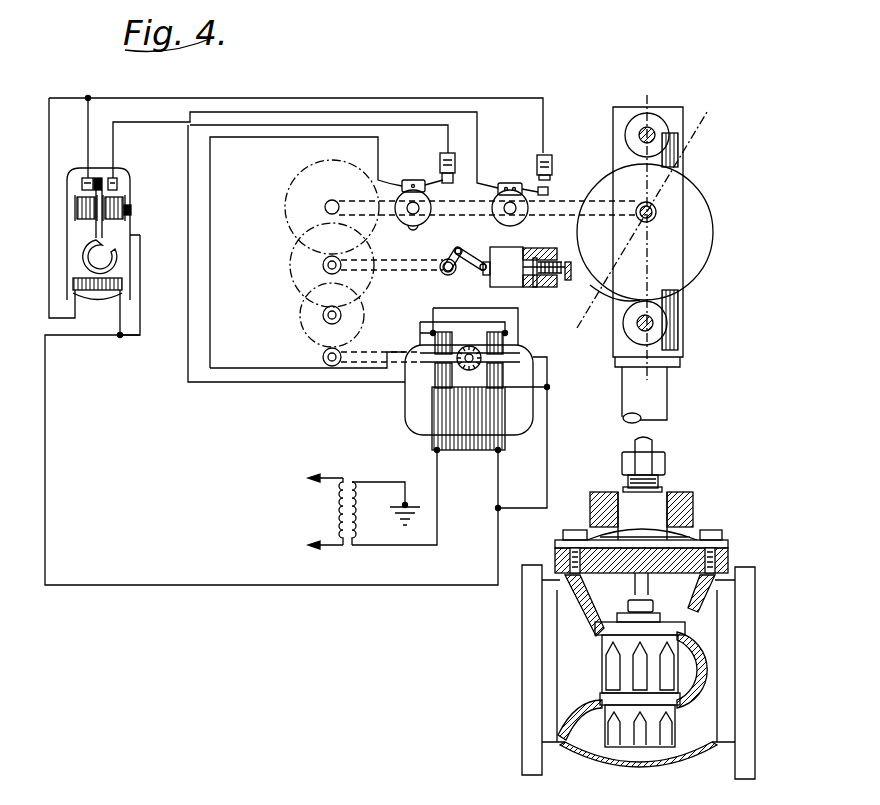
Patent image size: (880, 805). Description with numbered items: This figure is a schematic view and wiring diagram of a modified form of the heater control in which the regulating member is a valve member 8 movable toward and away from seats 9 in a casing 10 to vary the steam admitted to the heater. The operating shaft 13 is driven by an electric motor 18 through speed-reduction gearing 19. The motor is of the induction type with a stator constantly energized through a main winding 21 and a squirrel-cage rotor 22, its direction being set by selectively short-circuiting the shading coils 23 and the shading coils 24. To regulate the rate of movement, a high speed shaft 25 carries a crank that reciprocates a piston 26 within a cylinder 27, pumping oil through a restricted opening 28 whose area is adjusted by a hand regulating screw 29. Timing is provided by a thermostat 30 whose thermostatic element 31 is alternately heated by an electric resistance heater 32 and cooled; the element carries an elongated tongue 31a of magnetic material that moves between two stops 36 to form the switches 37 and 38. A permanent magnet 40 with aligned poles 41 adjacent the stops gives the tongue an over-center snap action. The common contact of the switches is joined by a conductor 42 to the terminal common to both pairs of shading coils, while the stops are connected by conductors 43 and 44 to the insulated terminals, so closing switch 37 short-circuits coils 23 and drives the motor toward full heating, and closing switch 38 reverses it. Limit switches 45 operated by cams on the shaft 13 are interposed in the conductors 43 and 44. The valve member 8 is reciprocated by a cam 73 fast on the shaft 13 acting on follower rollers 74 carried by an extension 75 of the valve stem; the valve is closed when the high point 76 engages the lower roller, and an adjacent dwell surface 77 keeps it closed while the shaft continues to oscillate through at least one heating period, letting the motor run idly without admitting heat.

The valve member 8 is at (665, 626).
The seats 9 is at (705, 705).
The casing 10 is at (592, 758).
The operating shaft 13 is at (458, 218).
The electric motor 18 is at (418, 430).
The speed-reduction gearing 19 is at (300, 300).
The main winding 21 is at (461, 450).
The rotor 22 is at (470, 345).
The shading coils 23 is at (510, 350).
The shading coils 24 is at (433, 343).
The high speed shaft 25 is at (386, 272).
The piston 26 is at (482, 240).
The cylinder 27 is at (512, 250).
The restricted opening 28 is at (536, 287).
The hand regulating screw 29 is at (569, 281).
The thermostat 30 is at (142, 175).
The thermostatic element 31 is at (118, 259).
The tongue 31a is at (122, 234).
The electric resistance heater 32 is at (110, 296).
The stops 36 is at (86, 177).
The switch 37 is at (118, 194).
The switch 38 is at (97, 177).
The permanent magnet 40 is at (131, 212).
The poles 41 is at (85, 200).
The conductor 42 is at (246, 594).
The conductor 43 is at (162, 132).
The conductor 44 is at (528, 108).
The limit switches 45 is at (440, 173).
The cam 73 is at (702, 245).
The follower rollers 74 is at (668, 139).
The extension 75 is at (655, 388).
The high point 76 is at (601, 303).
The dwell surface 77 is at (630, 288).